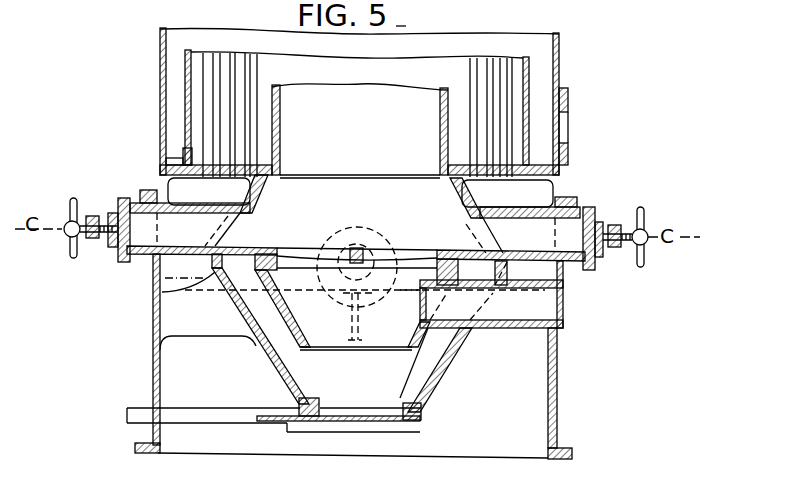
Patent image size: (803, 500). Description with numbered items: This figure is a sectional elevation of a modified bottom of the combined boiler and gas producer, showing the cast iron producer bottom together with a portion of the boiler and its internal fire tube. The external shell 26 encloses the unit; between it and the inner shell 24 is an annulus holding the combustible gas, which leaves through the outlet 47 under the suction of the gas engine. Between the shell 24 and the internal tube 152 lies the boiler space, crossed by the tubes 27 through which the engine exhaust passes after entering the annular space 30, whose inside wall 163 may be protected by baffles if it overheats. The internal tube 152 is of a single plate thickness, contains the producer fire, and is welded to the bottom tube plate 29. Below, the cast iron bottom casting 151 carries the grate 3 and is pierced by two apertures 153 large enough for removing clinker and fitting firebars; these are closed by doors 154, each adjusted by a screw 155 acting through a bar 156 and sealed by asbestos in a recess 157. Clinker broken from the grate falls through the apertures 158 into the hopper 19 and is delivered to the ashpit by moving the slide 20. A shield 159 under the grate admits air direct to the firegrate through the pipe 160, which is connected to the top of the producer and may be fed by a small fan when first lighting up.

The boiler shell 24 is at (160, 68).
The external shell 26 is at (185, 104).
The exhaust tubes 27 is at (242, 92).
The bottom tube plate 29 is at (184, 158).
The gas outlet 47 is at (568, 128).
The internal tube 152 is at (281, 162).
The annular space 30 is at (360, 192).
The inside wall of space 30 163 is at (262, 192).
The apertures 153 is at (355, 221).
The grate 3 is at (297, 249).
The screw 155 is at (100, 197).
The bar 156 is at (625, 225).
The recess 157 is at (128, 262).
The doors 154 is at (118, 260).
The apertures 158 is at (359, 267).
The shield 159 is at (290, 318).
The pipe 160 is at (481, 294).
The bottom casting 151 is at (153, 356).
The hopper 19 is at (359, 341).
The slide 20 is at (333, 417).